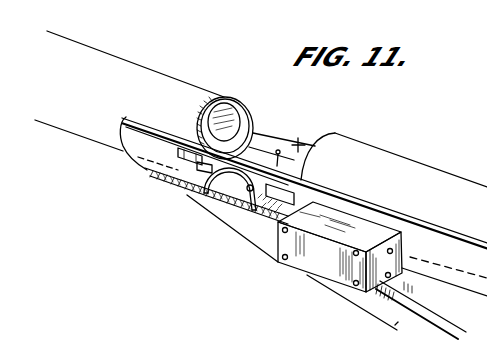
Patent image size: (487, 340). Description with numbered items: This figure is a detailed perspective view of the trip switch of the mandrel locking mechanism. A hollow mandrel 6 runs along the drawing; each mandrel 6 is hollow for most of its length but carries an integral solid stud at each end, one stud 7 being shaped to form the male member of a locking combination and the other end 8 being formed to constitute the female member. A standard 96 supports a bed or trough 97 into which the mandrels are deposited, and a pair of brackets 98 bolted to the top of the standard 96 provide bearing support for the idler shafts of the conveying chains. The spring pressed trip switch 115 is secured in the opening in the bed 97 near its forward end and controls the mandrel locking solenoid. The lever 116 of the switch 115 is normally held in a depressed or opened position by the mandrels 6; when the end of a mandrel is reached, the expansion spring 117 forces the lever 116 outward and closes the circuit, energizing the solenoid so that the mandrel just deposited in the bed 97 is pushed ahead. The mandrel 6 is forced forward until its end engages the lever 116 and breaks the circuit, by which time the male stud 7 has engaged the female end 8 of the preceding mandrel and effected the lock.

The mandrel 6 is at (462, 168).
The stud 7 is at (290, 143).
The end of mandrel 8 is at (240, 118).
The standard 96 is at (431, 298).
The bed 97 is at (443, 233).
The brackets 98 is at (412, 331).
The trip switch 115 is at (313, 262).
The lever 116 is at (204, 172).
The expansion spring 117 is at (231, 219).